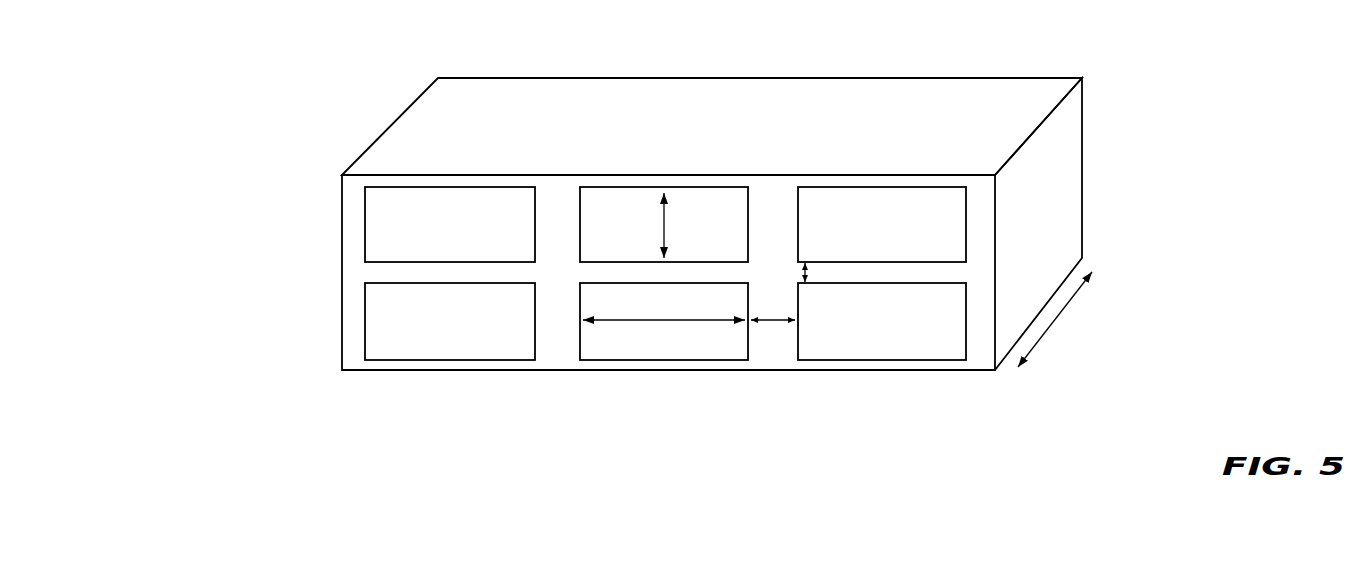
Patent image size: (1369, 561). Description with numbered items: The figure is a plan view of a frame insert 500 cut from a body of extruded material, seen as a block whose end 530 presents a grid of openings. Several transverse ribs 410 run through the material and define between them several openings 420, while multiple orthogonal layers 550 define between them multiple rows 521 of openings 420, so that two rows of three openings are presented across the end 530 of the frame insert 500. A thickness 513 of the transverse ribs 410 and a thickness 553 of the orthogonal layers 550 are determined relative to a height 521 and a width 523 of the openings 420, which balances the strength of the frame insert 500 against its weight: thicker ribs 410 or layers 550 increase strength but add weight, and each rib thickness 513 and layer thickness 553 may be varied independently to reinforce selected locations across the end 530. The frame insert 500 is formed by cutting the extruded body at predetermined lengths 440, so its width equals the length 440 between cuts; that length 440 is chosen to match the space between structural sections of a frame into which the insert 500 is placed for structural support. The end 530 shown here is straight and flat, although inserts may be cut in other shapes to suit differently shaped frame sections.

The frame insert 500 is at (380, 135).
The transverse ribs 410 is at (348, 345).
The openings 420 is at (615, 300).
The rows of openings 521 is at (663, 232).
The thickness of the orthogonal layers 553 is at (805, 265).
The orthogonal layers 550 is at (953, 272).
The predetermined lengths 440 is at (1060, 315).
The end of the frame insert 530 is at (963, 367).
The width of the openings 523 is at (688, 320).
The thickness of the transverse ribs 513 is at (773, 320).